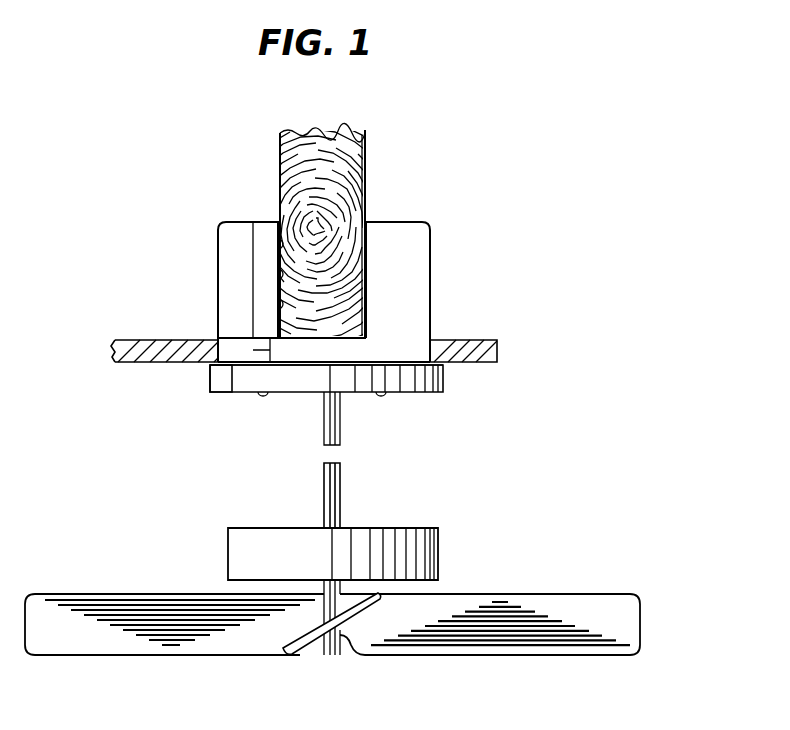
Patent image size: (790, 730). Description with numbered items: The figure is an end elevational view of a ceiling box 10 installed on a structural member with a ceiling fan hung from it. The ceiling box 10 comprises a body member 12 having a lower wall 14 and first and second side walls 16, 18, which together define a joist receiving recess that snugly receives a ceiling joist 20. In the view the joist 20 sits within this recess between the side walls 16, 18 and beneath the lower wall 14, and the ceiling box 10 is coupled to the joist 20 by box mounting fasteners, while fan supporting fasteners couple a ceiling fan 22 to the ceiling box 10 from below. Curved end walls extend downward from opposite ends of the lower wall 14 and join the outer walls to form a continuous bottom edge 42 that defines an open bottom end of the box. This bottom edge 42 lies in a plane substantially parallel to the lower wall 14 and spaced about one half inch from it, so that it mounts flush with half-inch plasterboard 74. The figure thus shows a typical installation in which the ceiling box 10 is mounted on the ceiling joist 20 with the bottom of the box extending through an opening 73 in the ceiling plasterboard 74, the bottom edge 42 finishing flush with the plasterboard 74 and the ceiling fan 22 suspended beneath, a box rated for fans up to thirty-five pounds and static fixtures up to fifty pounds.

The ceiling box 10 is at (188, 229).
The body member 12 is at (432, 262).
The lower wall 14 is at (320, 331).
The first side wall 16 is at (288, 234).
The second side wall 18 is at (354, 242).
The ceiling joist 20 is at (364, 136).
The ceiling fan 22 is at (447, 390).
The bottom edge 42 is at (232, 370).
The opening 73 is at (428, 345).
The plasterboard 74 is at (497, 346).